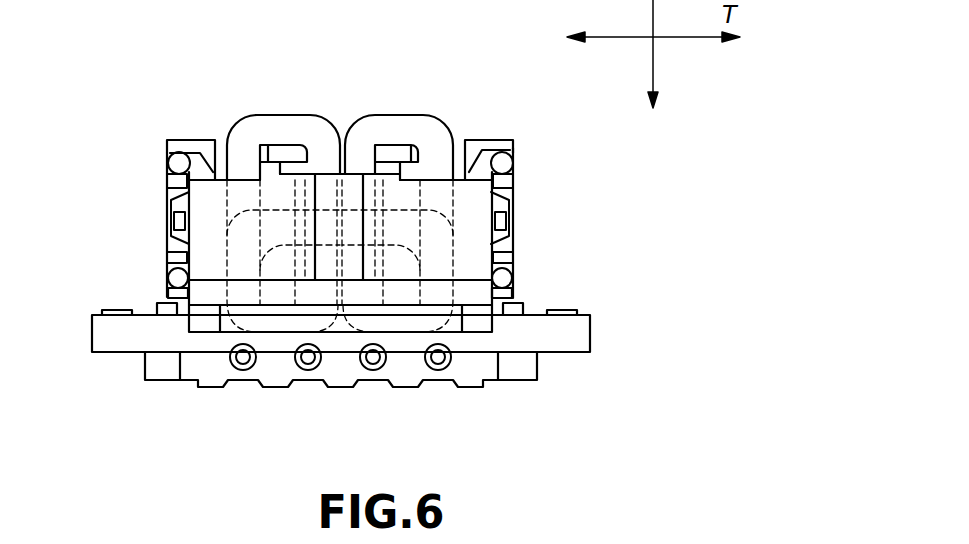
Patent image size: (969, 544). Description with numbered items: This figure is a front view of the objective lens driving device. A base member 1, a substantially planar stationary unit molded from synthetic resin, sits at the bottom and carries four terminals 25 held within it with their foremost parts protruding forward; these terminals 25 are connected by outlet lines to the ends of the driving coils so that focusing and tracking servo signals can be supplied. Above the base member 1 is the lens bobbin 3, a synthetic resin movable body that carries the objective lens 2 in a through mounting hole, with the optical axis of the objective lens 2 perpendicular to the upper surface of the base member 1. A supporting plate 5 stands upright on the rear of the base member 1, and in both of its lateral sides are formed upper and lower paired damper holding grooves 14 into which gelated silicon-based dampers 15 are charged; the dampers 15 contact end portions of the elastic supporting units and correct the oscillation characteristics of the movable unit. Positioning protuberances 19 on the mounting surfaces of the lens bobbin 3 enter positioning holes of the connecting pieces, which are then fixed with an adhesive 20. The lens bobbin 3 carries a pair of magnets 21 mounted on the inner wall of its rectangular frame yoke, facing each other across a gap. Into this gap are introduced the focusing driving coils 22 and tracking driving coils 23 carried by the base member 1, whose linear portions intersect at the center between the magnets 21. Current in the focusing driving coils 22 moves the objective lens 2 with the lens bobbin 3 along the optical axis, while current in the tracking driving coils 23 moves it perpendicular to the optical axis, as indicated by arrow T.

The base member 1 is at (577, 333).
The objective lens 2 is at (333, 112).
The lens bobbin 3 is at (215, 178).
The supporting plate 5 is at (513, 177).
The damper holding grooves 14 is at (167, 163).
The dampers 15 is at (180, 160).
The positioning protuberances 19 is at (168, 222).
The adhesive 20 is at (167, 186).
The magnets 21 is at (385, 190).
The focusing driving coils 22 is at (450, 232).
The tracking driving coils 23 is at (270, 112).
The terminals 25 is at (243, 360).